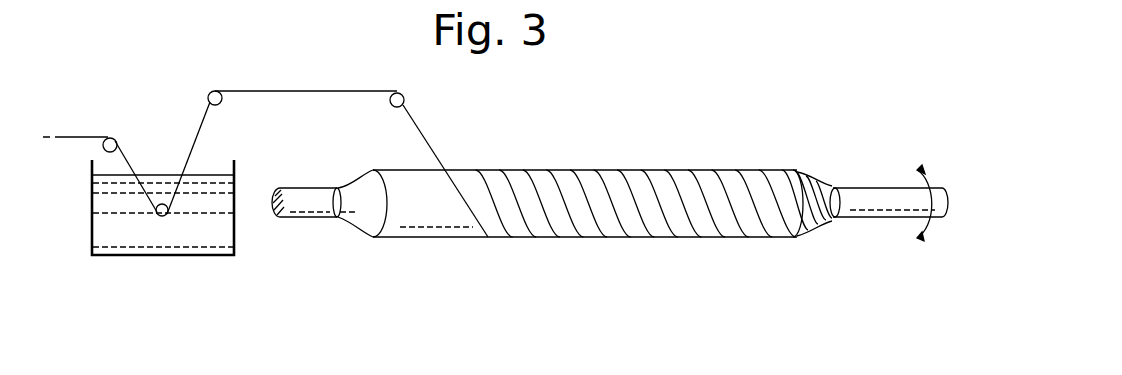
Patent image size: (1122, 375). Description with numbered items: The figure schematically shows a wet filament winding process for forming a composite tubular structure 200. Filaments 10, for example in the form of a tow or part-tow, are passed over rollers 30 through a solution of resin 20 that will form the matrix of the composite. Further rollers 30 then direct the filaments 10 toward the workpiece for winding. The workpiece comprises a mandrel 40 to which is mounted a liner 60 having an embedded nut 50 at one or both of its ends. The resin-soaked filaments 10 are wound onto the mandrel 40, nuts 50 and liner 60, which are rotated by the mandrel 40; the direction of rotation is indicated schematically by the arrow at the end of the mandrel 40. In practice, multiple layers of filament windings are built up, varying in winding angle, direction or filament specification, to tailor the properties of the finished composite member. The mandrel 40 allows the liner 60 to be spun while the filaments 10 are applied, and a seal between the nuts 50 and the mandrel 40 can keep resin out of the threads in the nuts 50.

The filaments 10 is at (88, 135).
The resin 20 is at (203, 232).
The rollers 30 is at (210, 94).
The mandrel 40 is at (303, 198).
The nut 50 is at (370, 212).
The liner 60 is at (445, 212).
The composite tubular structure 200 is at (665, 151).